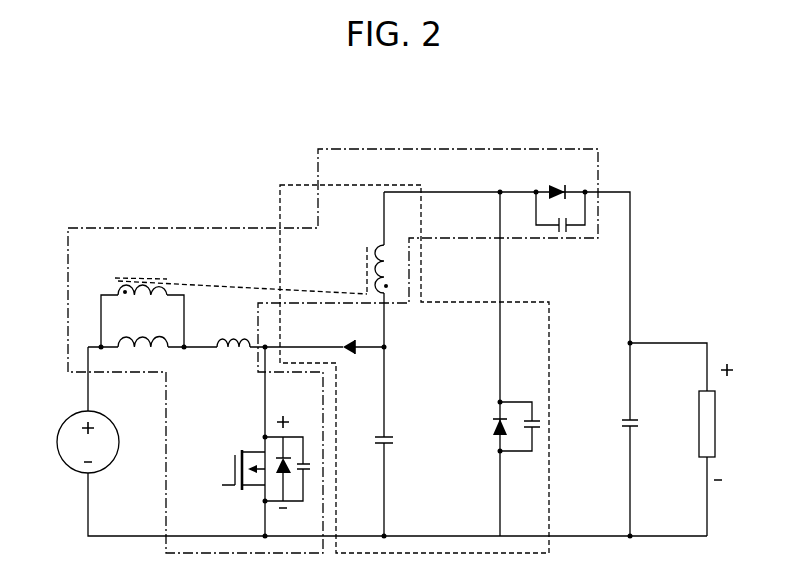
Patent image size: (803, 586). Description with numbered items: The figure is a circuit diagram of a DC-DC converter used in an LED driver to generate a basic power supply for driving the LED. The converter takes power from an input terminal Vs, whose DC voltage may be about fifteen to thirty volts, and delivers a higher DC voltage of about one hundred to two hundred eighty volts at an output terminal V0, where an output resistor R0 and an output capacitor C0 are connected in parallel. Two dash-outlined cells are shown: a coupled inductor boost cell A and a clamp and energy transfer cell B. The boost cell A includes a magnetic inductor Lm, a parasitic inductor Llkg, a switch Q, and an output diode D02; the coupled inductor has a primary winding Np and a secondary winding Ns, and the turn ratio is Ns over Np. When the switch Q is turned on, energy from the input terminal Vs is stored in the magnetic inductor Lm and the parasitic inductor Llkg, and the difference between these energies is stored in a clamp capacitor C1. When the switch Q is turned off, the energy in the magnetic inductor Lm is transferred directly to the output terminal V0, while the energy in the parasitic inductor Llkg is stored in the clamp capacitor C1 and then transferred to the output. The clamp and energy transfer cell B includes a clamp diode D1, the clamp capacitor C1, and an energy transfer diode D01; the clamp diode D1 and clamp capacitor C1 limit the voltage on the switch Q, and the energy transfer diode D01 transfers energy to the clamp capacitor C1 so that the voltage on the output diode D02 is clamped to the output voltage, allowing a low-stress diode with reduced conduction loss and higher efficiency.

The coupled inductor boost cell A is at (375, 149).
The clamp and energy transfer cell B is at (288, 185).
The input terminal Vs is at (70, 442).
The primary winding Np is at (234, 297).
The magnetic inductor Lm is at (143, 329).
The parasitic inductor Llkg is at (226, 329).
The switch Q is at (256, 462).
The clamp diode D1 is at (345, 333).
The secondary winding Ns is at (363, 268).
The clamp capacitor C1 is at (397, 438).
The energy transfer diode D01 is at (499, 425).
The output diode D02 is at (560, 196).
The output capacitor C0 is at (616, 423).
The output resistor R0 is at (690, 424).
The output terminal V0 is at (731, 422).